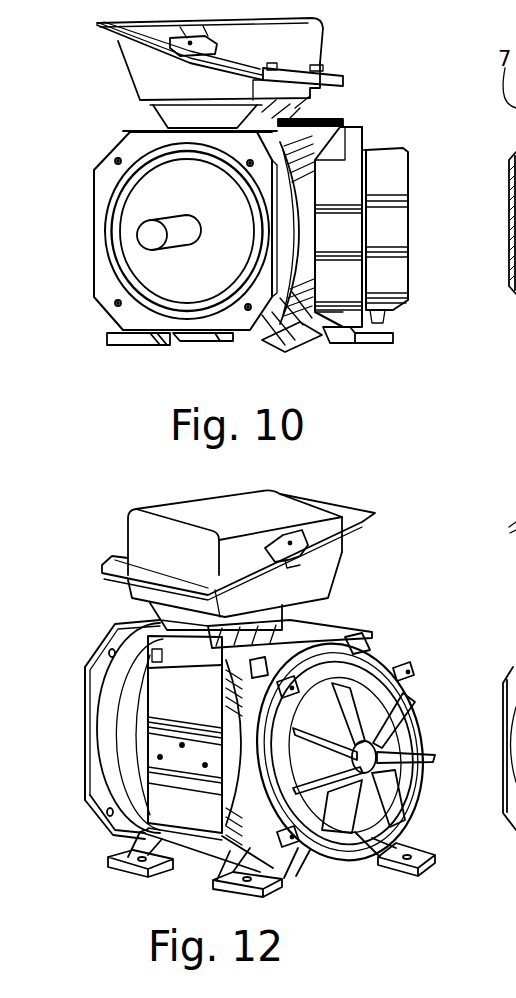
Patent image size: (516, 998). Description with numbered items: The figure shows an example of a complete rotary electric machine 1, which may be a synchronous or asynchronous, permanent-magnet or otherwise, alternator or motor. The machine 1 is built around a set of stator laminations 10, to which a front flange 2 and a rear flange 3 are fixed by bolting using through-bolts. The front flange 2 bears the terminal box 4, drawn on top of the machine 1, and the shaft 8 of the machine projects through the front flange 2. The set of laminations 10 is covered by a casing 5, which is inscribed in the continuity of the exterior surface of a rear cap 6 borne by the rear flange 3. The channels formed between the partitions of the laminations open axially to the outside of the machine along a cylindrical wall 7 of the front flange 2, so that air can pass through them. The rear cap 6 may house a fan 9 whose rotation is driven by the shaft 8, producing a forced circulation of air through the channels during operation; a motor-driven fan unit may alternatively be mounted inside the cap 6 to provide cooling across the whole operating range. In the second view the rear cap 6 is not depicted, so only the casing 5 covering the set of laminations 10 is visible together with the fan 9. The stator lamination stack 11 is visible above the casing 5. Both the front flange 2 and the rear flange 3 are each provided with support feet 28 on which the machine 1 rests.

In FIG. 10, the machine 1 is at (119, 117).
In FIG. 10, the front flange 2 is at (140, 192).
In FIG. 12, the front flange 2 is at (85, 733).
In FIG. 10, the rear flange 3 is at (363, 347).
In FIG. 12, the rear flange 3 is at (380, 650).
In FIG. 10, the terminal box 4 is at (148, 78).
In FIG. 10, the casing 5 is at (348, 127).
In FIG. 12, the casing 5 is at (197, 842).
In FIG. 10, the rear cap 6 is at (408, 175).
In FIG. 12, the cylindrical wall 7 is at (143, 677).
In FIG. 10, the shaft 8 is at (150, 240).
In FIG. 12, the fan 9 is at (430, 740).
In FIG. 10, the set of stator laminations 10 is at (332, 143).
In FIG. 12, the set of stator laminations 10 is at (218, 830).
In FIG. 10, the stator lamination stack 11 is at (303, 126).
In FIG. 10, the support feet 28 is at (313, 345).
In FIG. 12, the support feet 28 is at (118, 858).